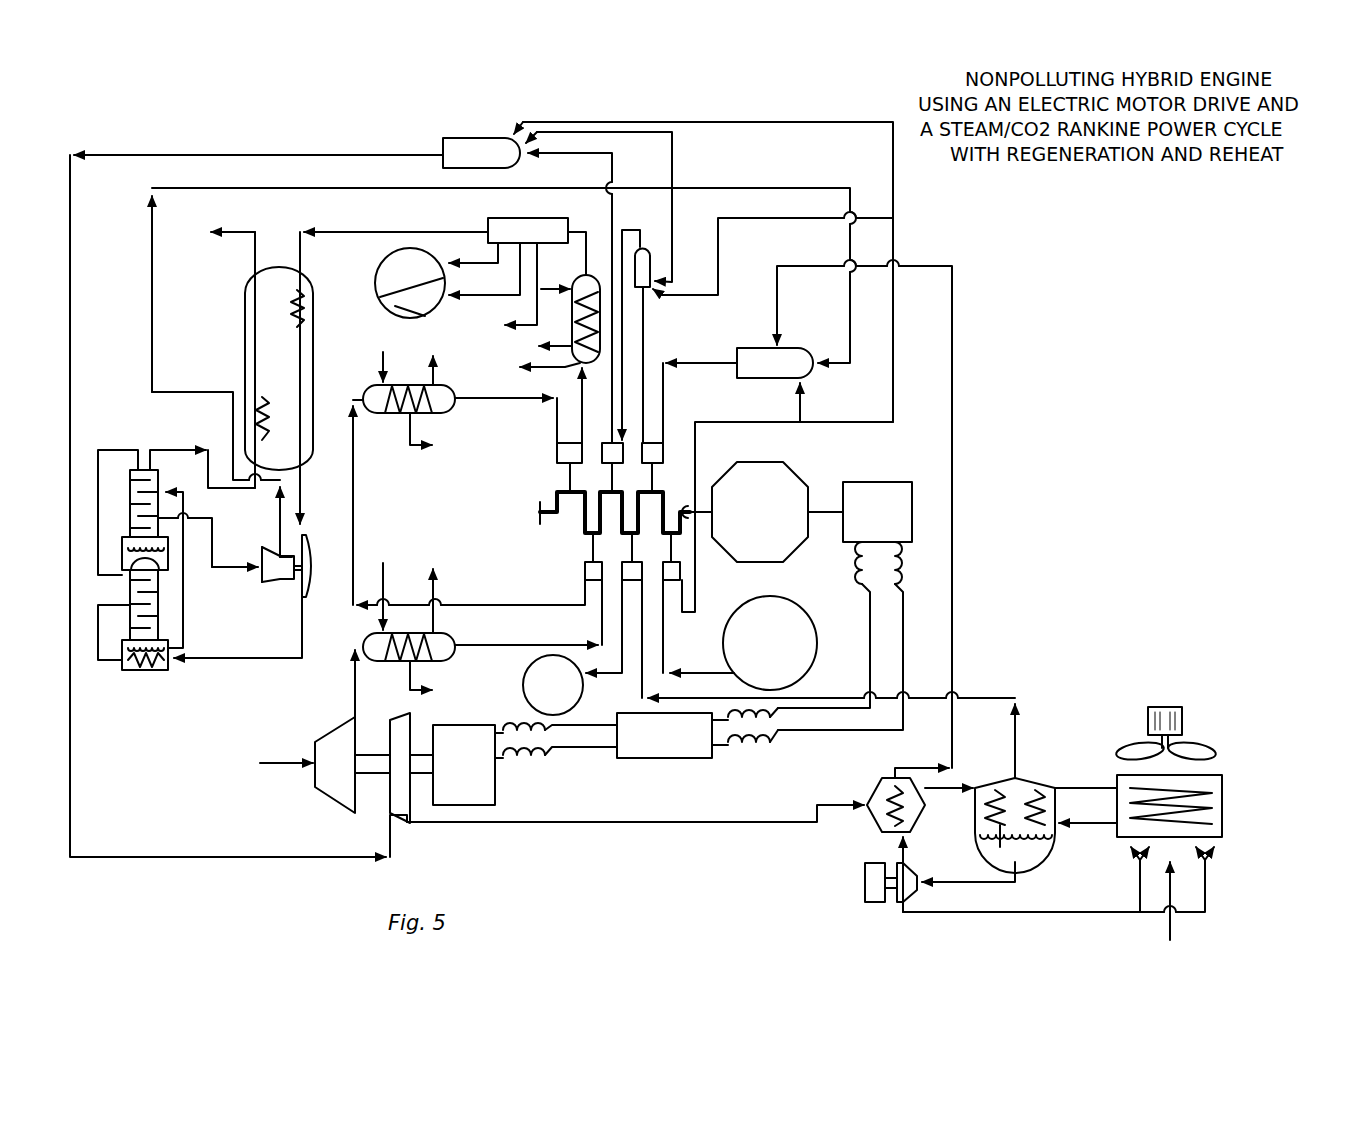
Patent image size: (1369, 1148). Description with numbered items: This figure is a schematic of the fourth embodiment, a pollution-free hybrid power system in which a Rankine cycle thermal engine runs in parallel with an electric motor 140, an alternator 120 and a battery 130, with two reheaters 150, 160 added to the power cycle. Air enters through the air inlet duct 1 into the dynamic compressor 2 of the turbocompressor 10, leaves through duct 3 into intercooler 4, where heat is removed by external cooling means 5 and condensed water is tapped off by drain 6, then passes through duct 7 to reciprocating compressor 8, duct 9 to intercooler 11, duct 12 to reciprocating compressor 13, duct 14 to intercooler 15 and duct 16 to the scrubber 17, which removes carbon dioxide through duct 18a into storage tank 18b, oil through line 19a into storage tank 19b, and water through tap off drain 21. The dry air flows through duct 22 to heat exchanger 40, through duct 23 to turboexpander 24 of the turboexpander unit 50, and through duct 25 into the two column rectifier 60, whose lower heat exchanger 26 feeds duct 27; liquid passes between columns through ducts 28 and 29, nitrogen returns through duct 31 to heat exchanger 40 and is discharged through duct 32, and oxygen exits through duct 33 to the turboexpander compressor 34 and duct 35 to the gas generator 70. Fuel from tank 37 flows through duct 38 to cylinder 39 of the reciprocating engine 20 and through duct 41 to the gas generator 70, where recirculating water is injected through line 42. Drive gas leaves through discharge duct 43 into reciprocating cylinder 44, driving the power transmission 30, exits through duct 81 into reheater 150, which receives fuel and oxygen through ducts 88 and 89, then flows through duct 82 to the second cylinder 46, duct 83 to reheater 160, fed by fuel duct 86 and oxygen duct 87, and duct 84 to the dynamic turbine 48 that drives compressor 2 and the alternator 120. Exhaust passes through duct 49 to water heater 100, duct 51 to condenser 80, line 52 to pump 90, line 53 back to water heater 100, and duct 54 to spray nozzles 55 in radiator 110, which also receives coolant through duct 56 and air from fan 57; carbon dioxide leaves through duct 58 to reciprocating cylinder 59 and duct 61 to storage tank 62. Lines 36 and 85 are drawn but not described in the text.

The air inlet duct 1 is at (290, 760).
The dynamic compressor 2 is at (332, 800).
The duct 3 is at (352, 658).
The intercooler 4 is at (442, 665).
The external cooling means 5 is at (380, 365).
The drain 6 is at (420, 448).
The duct 7 is at (510, 645).
The reciprocating compressor 8 is at (588, 560).
The duct 9 is at (356, 508).
The dynamic turbocompressor 10 is at (328, 718).
The intercooler 11 is at (405, 385).
The duct 12 is at (500, 400).
The reciprocating compressor 13 is at (556, 450).
The duct 14 is at (578, 400).
The intercooler 15 is at (578, 280).
The duct 16 is at (578, 225).
The scrubber 17 is at (508, 218).
The duct 18a is at (490, 262).
The storage tank 18b is at (378, 265).
The line 19a is at (510, 294).
The storage tank 19b is at (418, 314).
The reciprocating engine 20 is at (535, 510).
The tap off drain 21 is at (525, 325).
The duct 22 is at (420, 232).
The duct 23 is at (298, 495).
The turboexpander 24 is at (316, 549).
The duct 25 is at (212, 658).
The lower rectifier heat exchanger 26 is at (158, 672).
The duct 27 is at (107, 605).
The duct 28 is at (186, 600).
The duct 29 is at (107, 450).
The power transmission 30 is at (788, 462).
The duct 31 is at (163, 450).
The duct 32 is at (233, 232).
The duct 33 is at (185, 515).
The turboexpander compressor 34 is at (256, 560).
The duct 35 is at (276, 520).
The line 36 is at (836, 188).
The fuel supply tank 37 is at (780, 598).
The duct 38 is at (672, 660).
The reciprocating engine cylinder 39 is at (670, 560).
The heat exchanger 40 is at (240, 325).
The duct 41 is at (728, 422).
The line 42 is at (956, 360).
The discharge duct 43 is at (690, 362).
The reciprocating cylinder 44 is at (665, 443).
The second cylinder 46 is at (610, 465).
The dynamic turbine 48 is at (388, 818).
The duct 49 is at (615, 823).
The turboexpander 50 is at (266, 600).
The duct 51 is at (955, 775).
The line 52 is at (935, 882).
The line 53 is at (907, 852).
The duct 54 is at (1035, 912).
The nozzles 55 is at (1213, 865).
The duct 56 is at (1070, 788).
The fan 57 is at (1170, 707).
The duct 58 is at (998, 685).
The reciprocating cylinder 59 is at (630, 560).
The rectifier 60 is at (142, 690).
The duct 61 is at (640, 697).
The storage tank 62 is at (522, 678).
The gas generator 70 is at (762, 340).
The condenser 80 is at (1040, 770).
The duct 81 is at (644, 352).
The duct 82 is at (624, 335).
The duct 83 is at (613, 162).
The duct 84 is at (232, 155).
The line 85 is at (895, 340).
The duct 86 is at (895, 192).
The duct 87 is at (674, 165).
The duct 88 is at (745, 218).
The duct 89 is at (673, 220).
The pump 90 is at (862, 903).
The water heater 100 is at (862, 826).
The radiator 110 is at (1228, 800).
The alternator 120 is at (505, 785).
The battery 130 is at (668, 765).
The electric motor 140 is at (866, 480).
The reheater 150 is at (652, 246).
The reheater 160 is at (474, 132).